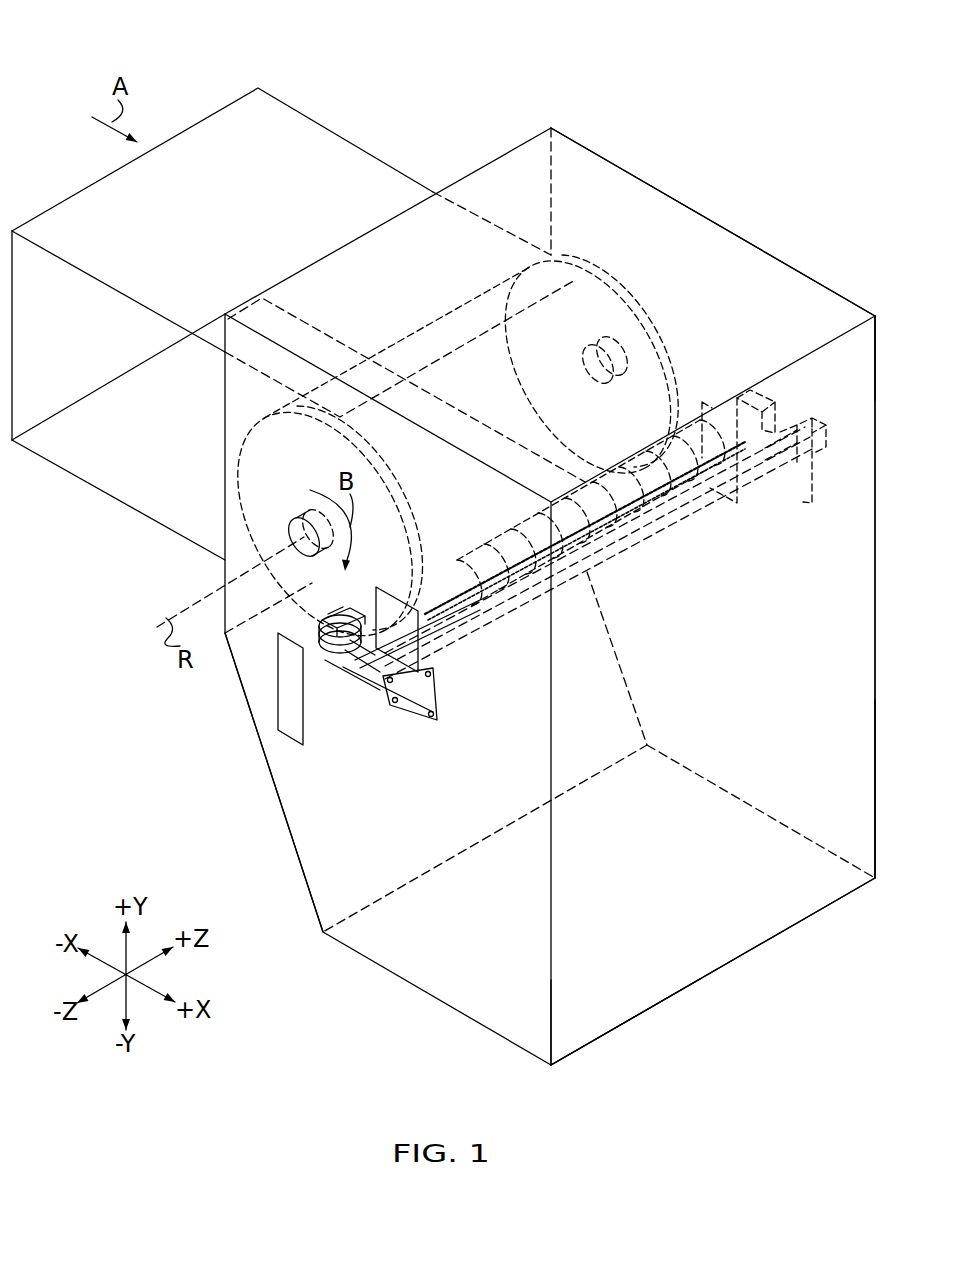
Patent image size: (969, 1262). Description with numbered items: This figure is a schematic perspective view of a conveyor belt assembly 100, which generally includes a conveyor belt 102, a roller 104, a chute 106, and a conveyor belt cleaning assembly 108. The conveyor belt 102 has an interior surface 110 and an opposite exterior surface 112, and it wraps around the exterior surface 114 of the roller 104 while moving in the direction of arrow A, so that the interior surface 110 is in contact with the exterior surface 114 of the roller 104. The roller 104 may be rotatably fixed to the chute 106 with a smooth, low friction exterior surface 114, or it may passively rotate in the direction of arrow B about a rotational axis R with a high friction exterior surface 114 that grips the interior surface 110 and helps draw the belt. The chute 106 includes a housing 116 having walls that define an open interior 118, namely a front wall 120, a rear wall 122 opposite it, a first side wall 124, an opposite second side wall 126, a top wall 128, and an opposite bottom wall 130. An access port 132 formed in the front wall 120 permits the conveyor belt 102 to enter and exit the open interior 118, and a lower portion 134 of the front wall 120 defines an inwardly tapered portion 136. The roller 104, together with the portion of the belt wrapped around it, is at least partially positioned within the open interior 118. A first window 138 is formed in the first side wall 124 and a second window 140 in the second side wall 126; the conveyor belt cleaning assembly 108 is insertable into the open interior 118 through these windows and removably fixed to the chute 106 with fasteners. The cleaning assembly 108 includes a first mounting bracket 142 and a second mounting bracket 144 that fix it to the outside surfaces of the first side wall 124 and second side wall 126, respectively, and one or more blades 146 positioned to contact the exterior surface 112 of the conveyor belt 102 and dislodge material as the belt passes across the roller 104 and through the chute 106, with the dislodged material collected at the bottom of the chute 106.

The conveyor belt assembly 100 is at (712, 98).
The conveyor belt 102 is at (328, 157).
The roller 104 is at (428, 443).
The chute 106 is at (885, 684).
The conveyor belt cleaning assembly 108 is at (401, 722).
The interior surface 110 is at (70, 424).
The exterior surface 112 is at (63, 214).
The exterior surface 114 is at (643, 316).
The housing 116 is at (886, 586).
The open interior 118 is at (688, 958).
The front wall 120 is at (226, 574).
The rear wall 122 is at (860, 773).
The first side wall 124 is at (548, 1050).
The second side wall 126 is at (877, 337).
The top wall 128 is at (787, 283).
The bottom wall 130 is at (597, 1040).
The access port 132 is at (243, 414).
The lower portion 134 is at (252, 780).
The inwardly tapered portion 136 is at (312, 862).
The first window 138 is at (438, 660).
The second window 140 is at (748, 505).
The first mounting bracket 142 is at (438, 708).
The second mounting bracket 144 is at (815, 487).
The blades 146 is at (466, 548).